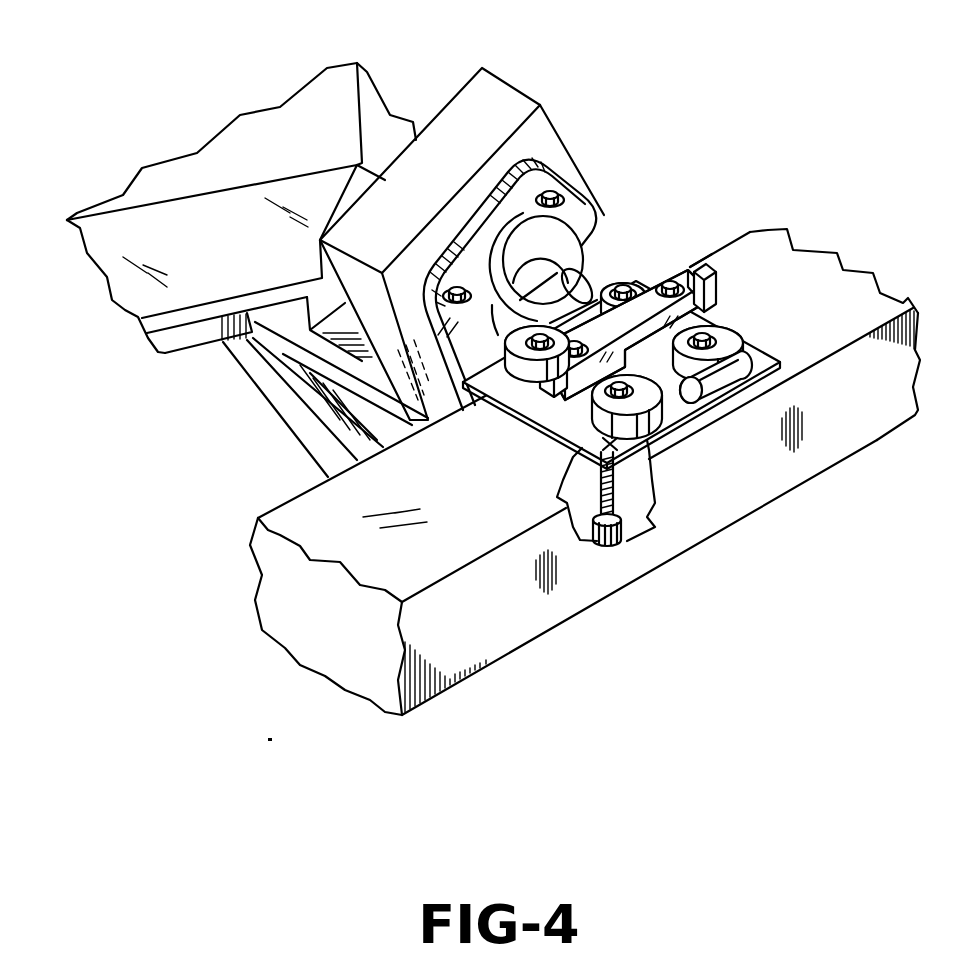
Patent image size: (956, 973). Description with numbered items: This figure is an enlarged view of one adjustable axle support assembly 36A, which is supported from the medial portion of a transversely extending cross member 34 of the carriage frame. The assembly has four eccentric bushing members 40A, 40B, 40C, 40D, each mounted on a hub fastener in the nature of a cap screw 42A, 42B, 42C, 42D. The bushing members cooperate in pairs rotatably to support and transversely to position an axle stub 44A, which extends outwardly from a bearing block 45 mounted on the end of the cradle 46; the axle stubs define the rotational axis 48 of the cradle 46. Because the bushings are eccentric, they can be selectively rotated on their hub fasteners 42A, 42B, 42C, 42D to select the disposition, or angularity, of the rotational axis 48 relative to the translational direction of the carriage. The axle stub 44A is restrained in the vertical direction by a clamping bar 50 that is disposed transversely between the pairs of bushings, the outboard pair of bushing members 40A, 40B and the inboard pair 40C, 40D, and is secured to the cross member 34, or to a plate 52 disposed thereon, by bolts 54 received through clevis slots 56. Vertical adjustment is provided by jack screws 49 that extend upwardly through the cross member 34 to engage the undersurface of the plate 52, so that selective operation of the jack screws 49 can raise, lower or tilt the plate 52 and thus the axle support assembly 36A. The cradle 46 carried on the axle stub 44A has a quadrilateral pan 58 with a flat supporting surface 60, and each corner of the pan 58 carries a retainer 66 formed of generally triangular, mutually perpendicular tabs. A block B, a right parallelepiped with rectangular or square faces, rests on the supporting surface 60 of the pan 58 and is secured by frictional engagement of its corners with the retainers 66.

The block B is at (283, 124).
The cross member 34 is at (322, 627).
The axle support assembly 36A is at (674, 240).
The eccentric bushing member 40A is at (643, 412).
The eccentric bushing member 40B is at (735, 343).
The eccentric bushing member 40C is at (537, 354).
The eccentric bushing member 40D is at (608, 290).
The cap screw 42A is at (603, 383).
The cap screw 42B is at (708, 320).
The cap screw 42C is at (538, 338).
The cap screw 42D is at (630, 286).
The axle stub 44A is at (738, 367).
The bearing block 45 is at (563, 230).
The cradle 46 is at (526, 67).
The rotational axis 48 is at (757, 425).
The jack screw 49 is at (638, 522).
The clamping bar 50 is at (705, 298).
The plate 52 is at (567, 417).
The bolt 54 is at (688, 283).
The clevis slot 56 is at (710, 270).
The quadrilateral pan 58 is at (210, 337).
The supporting surface 60 is at (168, 322).
The retainer 66 is at (325, 293).